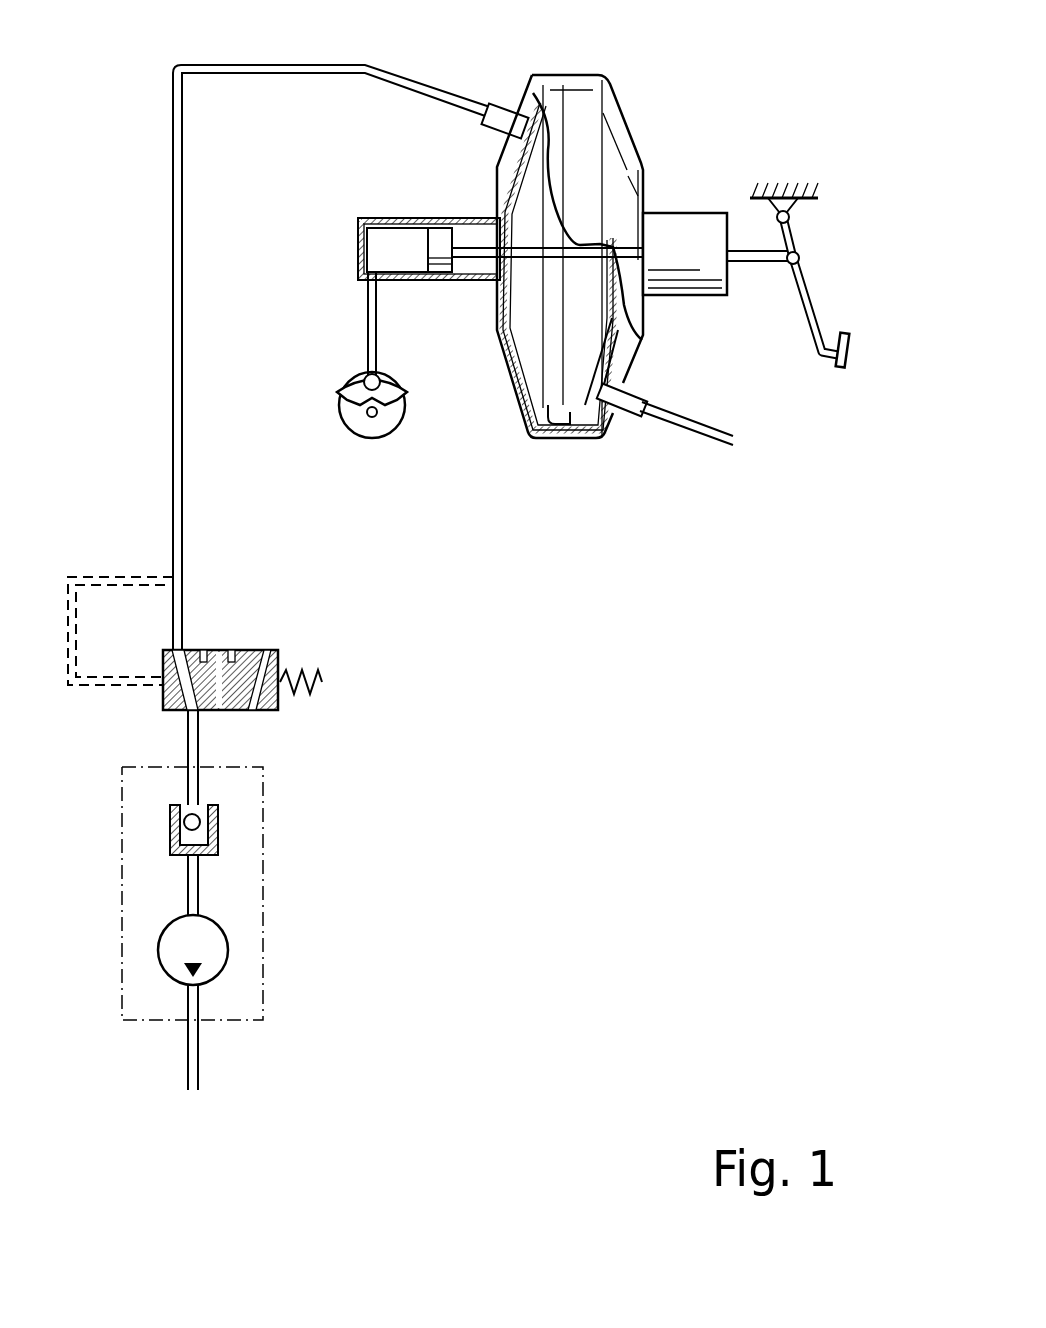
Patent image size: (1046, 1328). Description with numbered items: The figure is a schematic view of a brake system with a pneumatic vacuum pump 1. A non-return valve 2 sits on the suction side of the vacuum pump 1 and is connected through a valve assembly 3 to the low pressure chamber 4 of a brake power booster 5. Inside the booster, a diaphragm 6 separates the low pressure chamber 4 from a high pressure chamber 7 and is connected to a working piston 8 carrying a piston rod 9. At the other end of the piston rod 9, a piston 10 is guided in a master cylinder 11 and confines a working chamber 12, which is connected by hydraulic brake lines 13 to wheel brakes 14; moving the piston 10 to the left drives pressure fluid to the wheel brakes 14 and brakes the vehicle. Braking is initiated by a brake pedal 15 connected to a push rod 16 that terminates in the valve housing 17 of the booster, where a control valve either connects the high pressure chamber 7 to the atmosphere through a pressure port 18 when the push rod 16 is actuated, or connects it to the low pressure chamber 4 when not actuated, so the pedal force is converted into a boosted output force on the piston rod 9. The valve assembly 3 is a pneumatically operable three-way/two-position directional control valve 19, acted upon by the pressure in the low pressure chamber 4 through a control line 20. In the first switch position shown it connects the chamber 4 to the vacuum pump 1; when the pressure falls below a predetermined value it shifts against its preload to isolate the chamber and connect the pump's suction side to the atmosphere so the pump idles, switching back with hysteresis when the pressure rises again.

The pneumatic vacuum pump 1 is at (160, 955).
The non-return valve 2 is at (176, 822).
The valve assembly 3 is at (256, 645).
The low pressure chamber 4 is at (508, 188).
The brake power booster 5 is at (624, 96).
The diaphragm 6 is at (550, 392).
The high pressure chamber 7 is at (606, 362).
The working piston 8 is at (585, 350).
The piston rod 9 is at (487, 252).
The piston 10 is at (432, 238).
The master cylinder 11 is at (352, 256).
The working chamber 12 is at (395, 238).
The hydraulic brake lines 13 is at (366, 330).
The wheel brakes 14 is at (350, 390).
The brake pedal 15 is at (852, 346).
The push rod 16 is at (764, 264).
The valve housing 17 is at (694, 225).
The pressure port 18 is at (624, 414).
The three-way/two-position directional control valve 19 is at (192, 648).
The control line 20 is at (96, 577).